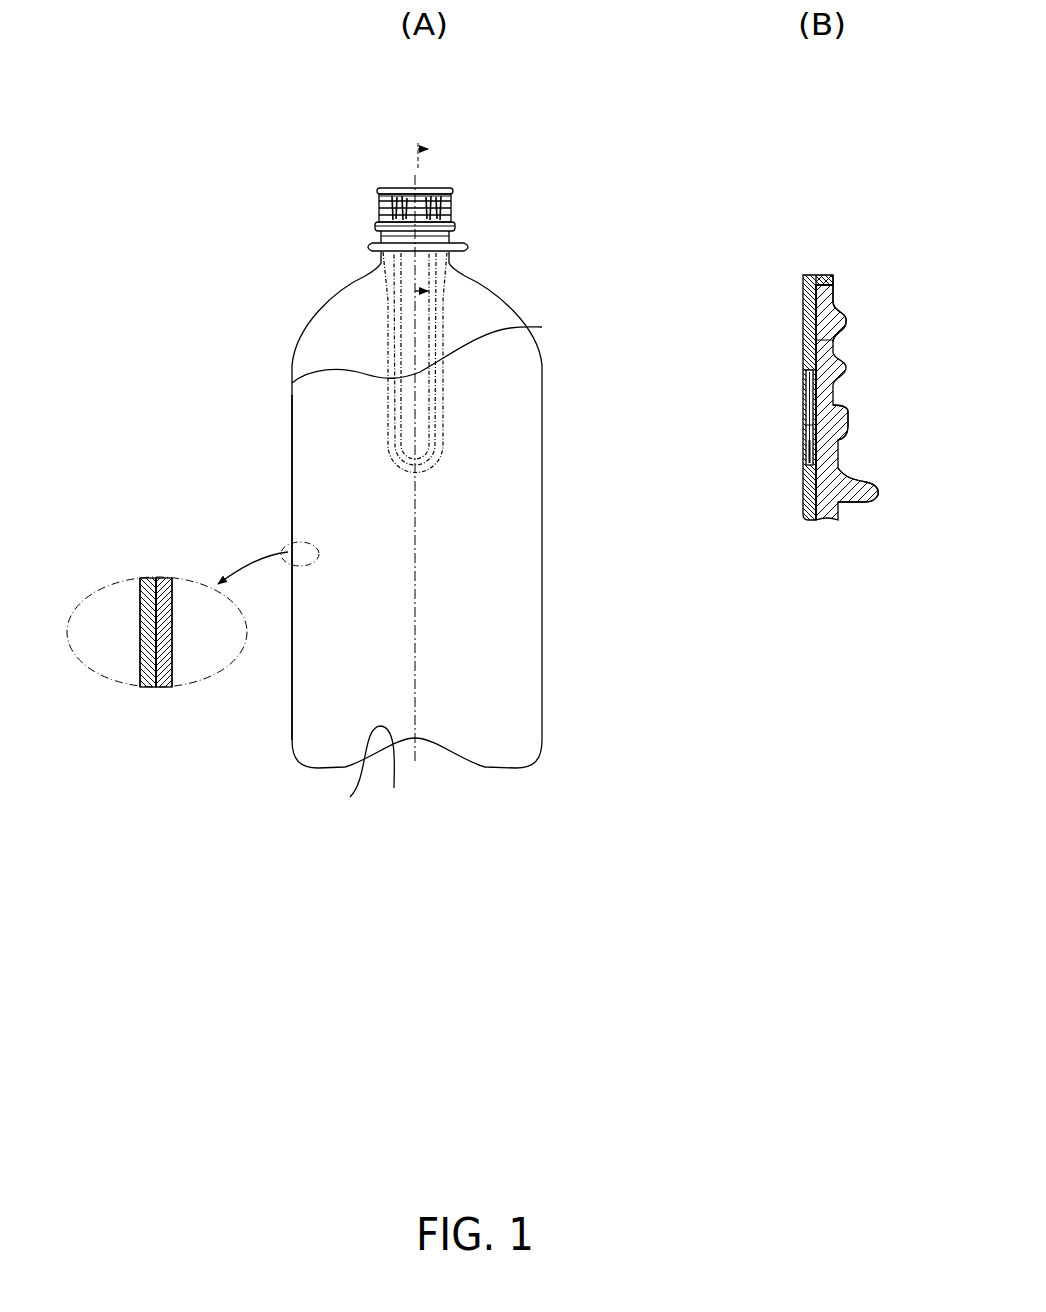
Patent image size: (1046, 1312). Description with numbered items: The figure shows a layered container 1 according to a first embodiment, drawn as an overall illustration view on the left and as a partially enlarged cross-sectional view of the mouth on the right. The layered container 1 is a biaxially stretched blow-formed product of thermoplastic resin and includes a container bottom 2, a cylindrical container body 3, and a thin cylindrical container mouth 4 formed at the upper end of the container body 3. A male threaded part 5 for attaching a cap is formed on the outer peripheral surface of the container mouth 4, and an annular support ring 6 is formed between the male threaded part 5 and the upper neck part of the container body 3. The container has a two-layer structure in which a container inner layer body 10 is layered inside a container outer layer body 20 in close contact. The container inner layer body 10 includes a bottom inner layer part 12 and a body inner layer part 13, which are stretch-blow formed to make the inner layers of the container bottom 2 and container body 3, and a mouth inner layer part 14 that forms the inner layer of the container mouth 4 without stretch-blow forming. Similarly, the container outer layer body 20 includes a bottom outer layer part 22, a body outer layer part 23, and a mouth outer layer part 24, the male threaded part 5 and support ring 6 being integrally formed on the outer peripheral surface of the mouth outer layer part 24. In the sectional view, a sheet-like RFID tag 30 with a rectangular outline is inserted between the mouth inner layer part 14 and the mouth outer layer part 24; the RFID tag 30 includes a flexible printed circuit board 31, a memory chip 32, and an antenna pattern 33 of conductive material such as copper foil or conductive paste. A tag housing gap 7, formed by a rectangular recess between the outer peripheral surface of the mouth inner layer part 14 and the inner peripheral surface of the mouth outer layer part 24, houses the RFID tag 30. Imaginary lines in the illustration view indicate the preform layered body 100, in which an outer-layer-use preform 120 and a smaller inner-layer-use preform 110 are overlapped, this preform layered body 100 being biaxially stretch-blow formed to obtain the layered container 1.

The layered container 1 is at (333, 172).
The container bottom 2 is at (400, 822).
The container body 3 is at (182, 426).
The container mouth 4 is at (252, 229).
The male threaded part 5 is at (450, 200).
The support ring 6 is at (452, 247).
The tag housing gap 7 is at (809, 425).
The container inner layer body 10 is at (175, 625).
The bottom inner layer part 12 is at (399, 807).
The body inner layer part 13 is at (292, 458).
The mouth inner layer part 14 is at (385, 242).
The container outer layer body 20 is at (138, 622).
The bottom outer layer part 22 is at (359, 773).
The body outer layer part 23 is at (292, 458).
The mouth outer layer part 24 is at (380, 200).
The RFID tag 30 is at (425, 200).
The flexible printed circuit board 31 is at (813, 390).
The memory chip 32 is at (830, 448).
The antenna pattern 33 is at (830, 422).
The preform layered body 100 is at (508, 503).
The inner-layer-use preform 110 is at (417, 440).
The outer-layer-use preform 120 is at (450, 443).